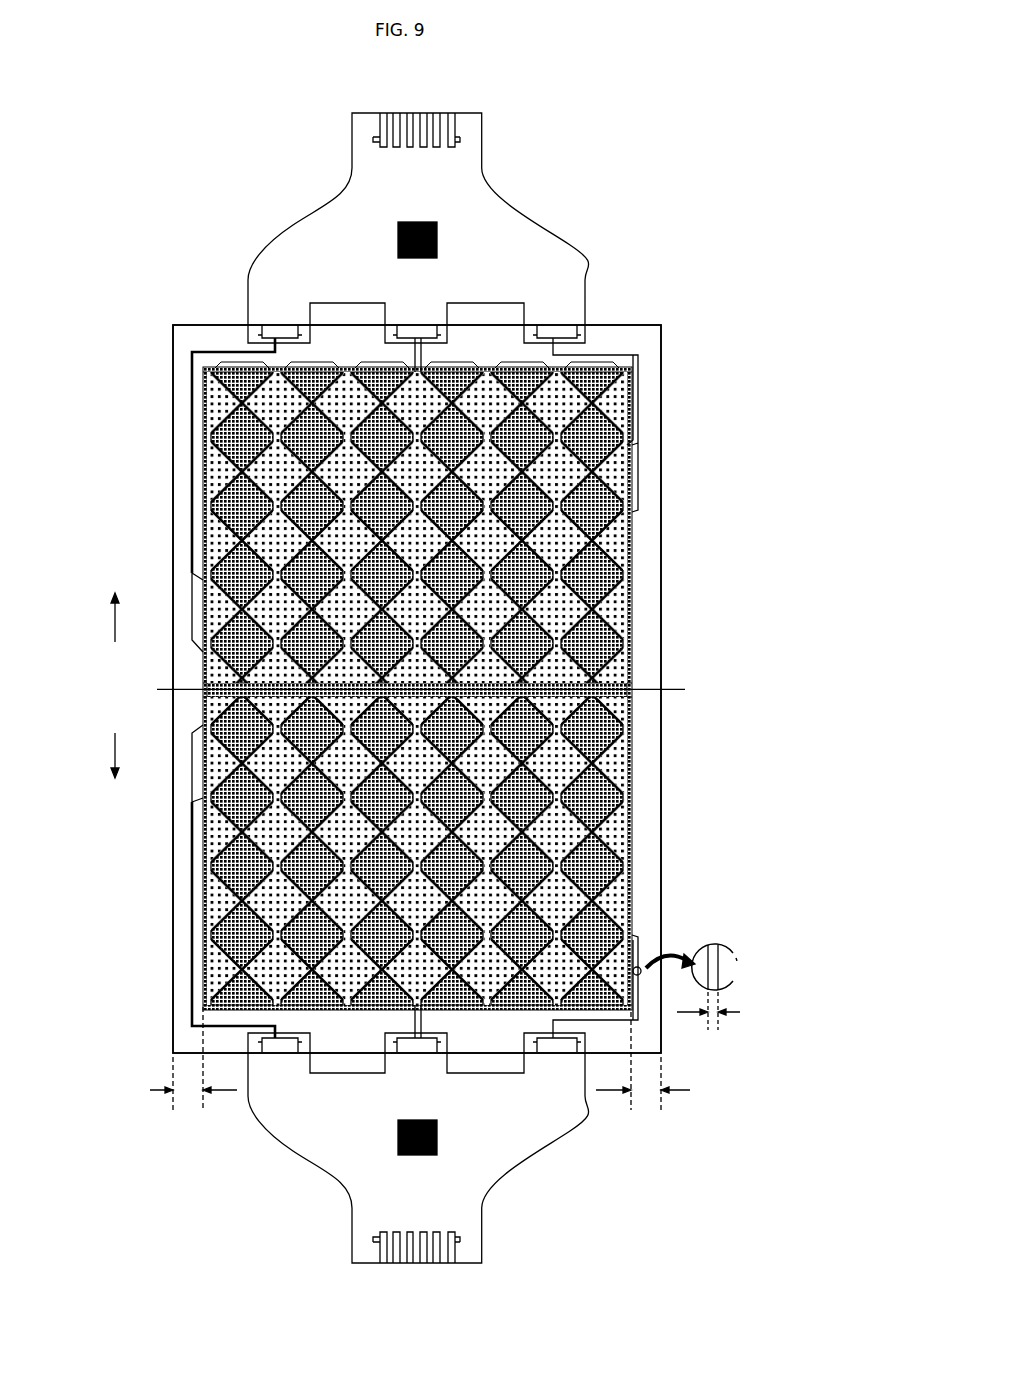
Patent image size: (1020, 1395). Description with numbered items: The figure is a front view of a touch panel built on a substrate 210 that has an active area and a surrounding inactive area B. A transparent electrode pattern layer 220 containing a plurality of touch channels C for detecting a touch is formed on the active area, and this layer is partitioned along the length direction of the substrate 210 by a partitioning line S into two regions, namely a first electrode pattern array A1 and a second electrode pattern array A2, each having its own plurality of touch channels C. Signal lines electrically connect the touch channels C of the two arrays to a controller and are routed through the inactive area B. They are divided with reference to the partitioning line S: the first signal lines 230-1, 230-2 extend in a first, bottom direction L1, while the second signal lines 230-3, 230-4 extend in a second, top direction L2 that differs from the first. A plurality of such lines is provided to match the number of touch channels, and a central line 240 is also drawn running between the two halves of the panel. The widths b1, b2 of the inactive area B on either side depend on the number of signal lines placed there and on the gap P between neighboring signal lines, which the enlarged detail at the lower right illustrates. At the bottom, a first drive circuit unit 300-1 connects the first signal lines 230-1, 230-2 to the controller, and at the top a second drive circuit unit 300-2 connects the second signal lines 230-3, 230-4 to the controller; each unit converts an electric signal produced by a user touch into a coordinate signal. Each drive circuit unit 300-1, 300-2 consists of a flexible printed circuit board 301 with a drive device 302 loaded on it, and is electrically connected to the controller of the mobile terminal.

The substrate 210 is at (663, 380).
The transparent electrode pattern layer 220 is at (632, 768).
The first signal line 230-1 is at (193, 1012).
The first signal line 230-2 is at (638, 908).
The second signal line 230-3 is at (192, 551).
The second signal line 230-4 is at (638, 457).
The connection line 240 is at (413, 1013).
The first drive circuit unit 300-1 is at (577, 1200).
The second drive circuit unit 300-2 is at (602, 127).
The flexible printed circuit board 301 is at (473, 147).
The drive device 302 is at (437, 240).
The first electrode pattern array A1 is at (632, 830).
The second electrode pattern array A2 is at (632, 557).
The inactive area B is at (652, 347).
The touch channel C is at (203, 506).
The partitioning line S is at (413, 691).
The bottom direction L1 is at (128, 755).
The top direction L2 is at (128, 617).
The gap between signal lines P is at (686, 997).
The width of inactive area b1 is at (193, 1072).
The width of inactive area b2 is at (643, 1074).